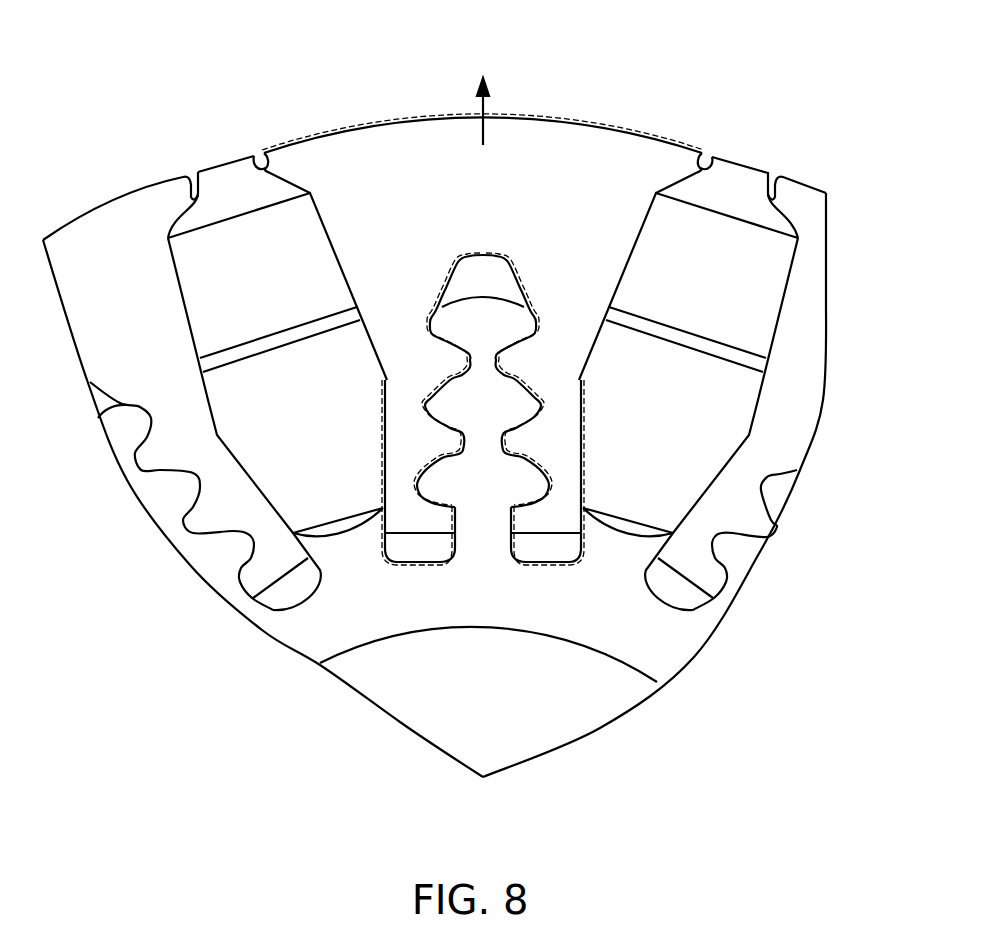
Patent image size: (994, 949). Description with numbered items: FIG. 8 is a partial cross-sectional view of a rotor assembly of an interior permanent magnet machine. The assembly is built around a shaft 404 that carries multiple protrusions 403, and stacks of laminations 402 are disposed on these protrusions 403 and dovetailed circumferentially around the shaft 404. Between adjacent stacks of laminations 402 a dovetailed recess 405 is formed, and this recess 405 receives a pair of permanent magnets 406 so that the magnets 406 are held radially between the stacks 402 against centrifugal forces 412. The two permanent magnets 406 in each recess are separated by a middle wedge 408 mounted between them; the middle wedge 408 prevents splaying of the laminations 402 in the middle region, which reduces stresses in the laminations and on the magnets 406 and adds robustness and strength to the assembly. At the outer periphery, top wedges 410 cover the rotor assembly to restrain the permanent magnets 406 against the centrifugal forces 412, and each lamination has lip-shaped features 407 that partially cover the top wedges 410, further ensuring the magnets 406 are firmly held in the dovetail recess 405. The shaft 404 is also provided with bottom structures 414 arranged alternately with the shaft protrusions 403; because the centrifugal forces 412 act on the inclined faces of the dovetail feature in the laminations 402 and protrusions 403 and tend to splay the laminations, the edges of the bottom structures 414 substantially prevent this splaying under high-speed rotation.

The stacks of laminations 402 is at (537, 183).
The protrusions of the shaft 403 is at (485, 484).
The shaft 404 is at (679, 647).
The dovetailed recess 405 is at (190, 257).
The permanent magnets 406 is at (706, 415).
The lip-shaped features 407 is at (270, 158).
The middle wedges 408 is at (260, 343).
The top wedges 410 is at (734, 183).
The centrifugal forces 412 is at (494, 82).
The bottom structures 414 is at (617, 540).